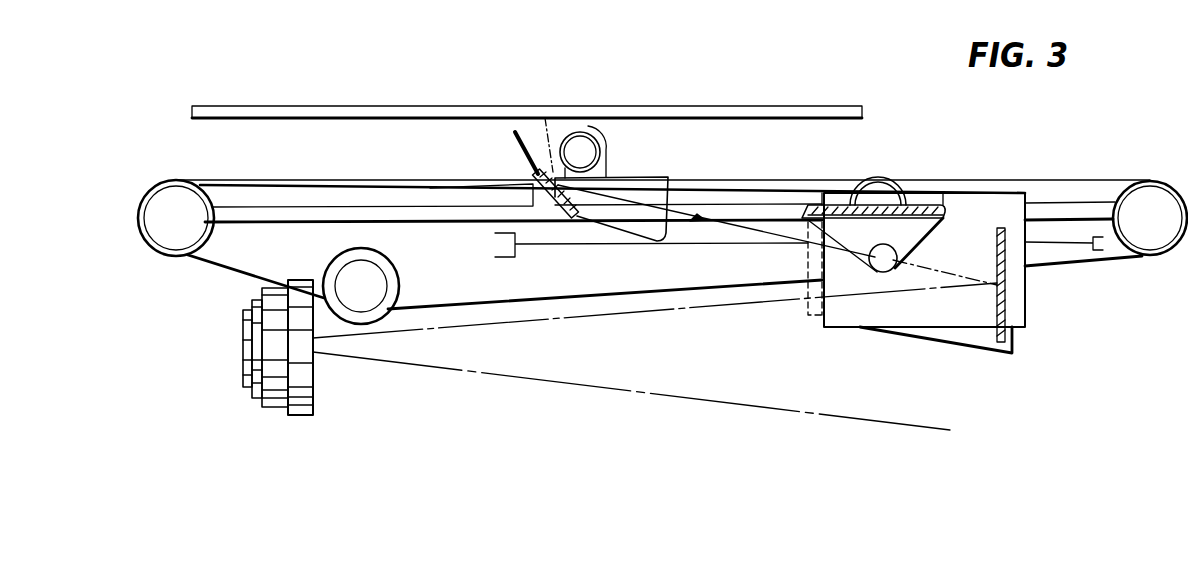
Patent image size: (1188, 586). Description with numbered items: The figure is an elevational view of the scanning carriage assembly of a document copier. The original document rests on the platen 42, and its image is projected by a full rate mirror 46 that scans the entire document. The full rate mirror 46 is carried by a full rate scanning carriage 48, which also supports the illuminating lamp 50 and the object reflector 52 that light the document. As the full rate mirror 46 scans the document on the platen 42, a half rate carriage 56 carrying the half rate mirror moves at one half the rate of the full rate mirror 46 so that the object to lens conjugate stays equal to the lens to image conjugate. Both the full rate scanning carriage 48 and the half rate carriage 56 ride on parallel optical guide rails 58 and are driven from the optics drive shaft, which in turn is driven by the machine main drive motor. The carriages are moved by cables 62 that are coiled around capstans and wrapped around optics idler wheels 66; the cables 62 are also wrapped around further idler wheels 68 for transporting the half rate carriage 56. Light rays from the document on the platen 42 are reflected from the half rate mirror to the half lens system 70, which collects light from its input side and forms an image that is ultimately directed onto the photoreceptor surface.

The platen 42 is at (367, 112).
The full rate mirror 46 is at (554, 215).
The full rate scanning carriage 48 is at (662, 183).
The illuminating lamp 50 is at (590, 152).
The object reflector 52 is at (523, 143).
The half rate carriage 56 is at (918, 232).
The optical guide rails 58 is at (302, 212).
The cables 62 is at (636, 290).
The optics idler wheels 66 is at (1143, 190).
The idler wheels 68 is at (882, 185).
The half lens system 70 is at (243, 326).